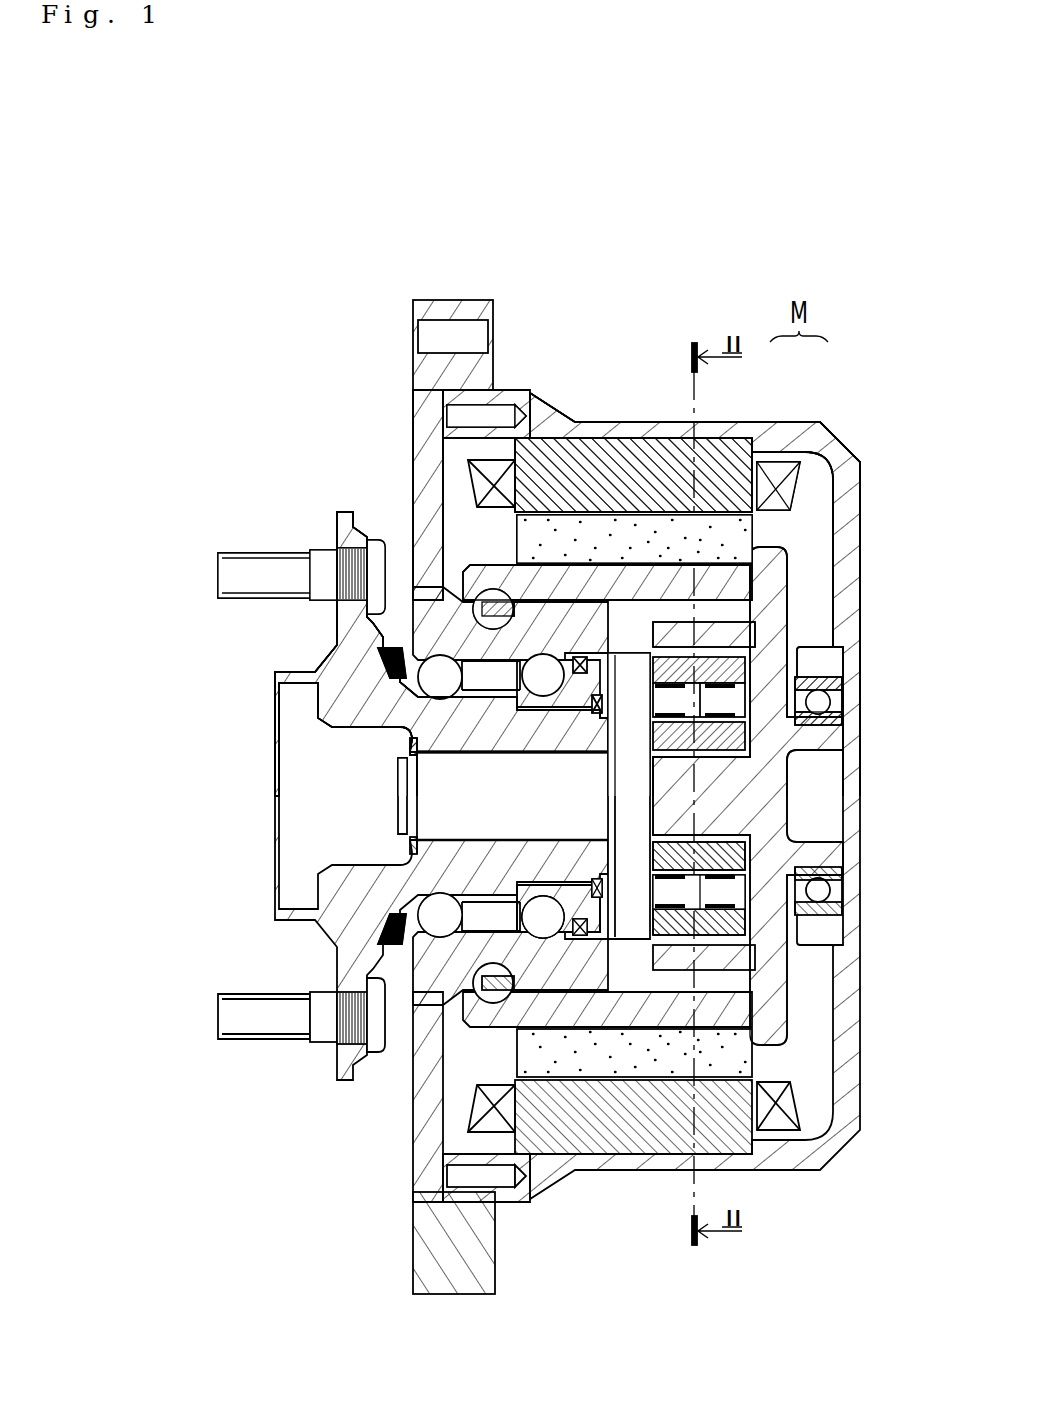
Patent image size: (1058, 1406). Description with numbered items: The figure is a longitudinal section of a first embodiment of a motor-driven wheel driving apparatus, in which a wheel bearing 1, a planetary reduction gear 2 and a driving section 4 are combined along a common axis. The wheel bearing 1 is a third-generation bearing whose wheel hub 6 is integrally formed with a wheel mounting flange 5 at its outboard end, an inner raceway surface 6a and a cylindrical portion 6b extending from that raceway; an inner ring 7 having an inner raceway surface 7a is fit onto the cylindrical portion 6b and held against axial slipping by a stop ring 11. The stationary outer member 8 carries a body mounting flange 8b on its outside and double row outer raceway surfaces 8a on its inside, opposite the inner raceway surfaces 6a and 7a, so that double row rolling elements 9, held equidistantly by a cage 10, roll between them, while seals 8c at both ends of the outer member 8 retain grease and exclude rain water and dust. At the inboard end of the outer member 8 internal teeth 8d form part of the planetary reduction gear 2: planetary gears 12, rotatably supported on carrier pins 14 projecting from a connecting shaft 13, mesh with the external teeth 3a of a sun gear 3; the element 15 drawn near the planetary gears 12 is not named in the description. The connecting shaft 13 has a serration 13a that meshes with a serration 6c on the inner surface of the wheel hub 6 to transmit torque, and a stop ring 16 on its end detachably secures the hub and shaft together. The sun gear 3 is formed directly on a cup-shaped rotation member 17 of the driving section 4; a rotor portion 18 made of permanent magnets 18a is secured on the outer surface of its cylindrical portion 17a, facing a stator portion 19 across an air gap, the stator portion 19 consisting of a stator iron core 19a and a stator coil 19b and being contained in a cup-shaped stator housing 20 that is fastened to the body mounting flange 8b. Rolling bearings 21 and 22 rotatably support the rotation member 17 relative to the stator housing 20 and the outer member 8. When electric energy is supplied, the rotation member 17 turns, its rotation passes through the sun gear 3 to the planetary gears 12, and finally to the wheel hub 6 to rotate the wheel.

The wheel bearing 1 is at (288, 522).
The planetary reduction gear 2 is at (861, 607).
The sun gear 3 is at (713, 808).
The external teeth 3a is at (703, 838).
The driving section 4 is at (882, 469).
The wheel mounting flange 5 is at (340, 515).
The wheel hub 6 is at (302, 668).
The inner raceway surface 6a is at (322, 718).
The cylindrical portion 6b is at (567, 700).
The serration 6c is at (445, 836).
The inner ring 7 is at (580, 930).
The inner raceway surface 7a is at (543, 910).
The outer member 8 is at (455, 592).
The outer raceway surfaces 8a is at (528, 588).
The body mounting flange 8b is at (432, 462).
The seals 8c is at (598, 915).
The internal teeth 8d is at (770, 528).
The rolling elements 9 is at (534, 907).
The cage 10 is at (412, 738).
The stop ring 11 is at (604, 703).
The planetary gears 12 is at (756, 598).
The connecting shaft 13 is at (434, 773).
The serration 13a is at (452, 742).
The carrier pins 14 is at (795, 655).
The roller bearing 15 is at (740, 950).
The stop ring 16 is at (396, 772).
The rotation member 17 is at (824, 737).
The cylindrical portion 17a is at (647, 575).
The rotor portion 18 is at (732, 524).
The permanent magnets 18a is at (602, 530).
The stator portion 19 is at (720, 450).
The stator iron core 19a is at (660, 455).
The stator coil 19b is at (805, 432).
The stator housing 20 is at (846, 432).
The rolling bearing 21 is at (820, 700).
The rolling bearing 22 is at (440, 528).